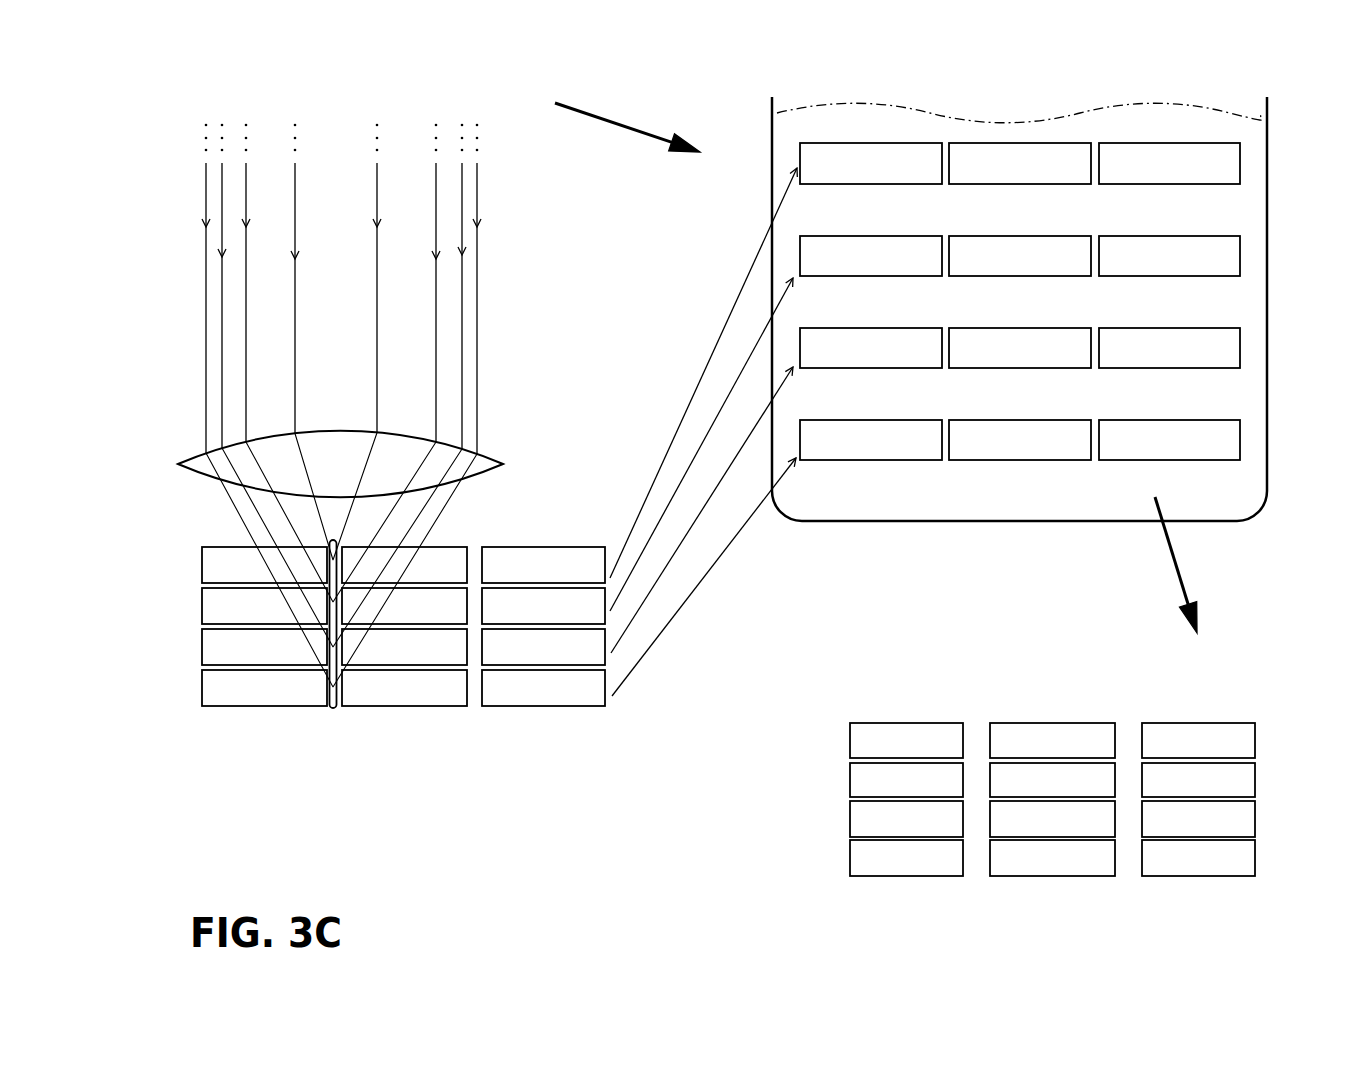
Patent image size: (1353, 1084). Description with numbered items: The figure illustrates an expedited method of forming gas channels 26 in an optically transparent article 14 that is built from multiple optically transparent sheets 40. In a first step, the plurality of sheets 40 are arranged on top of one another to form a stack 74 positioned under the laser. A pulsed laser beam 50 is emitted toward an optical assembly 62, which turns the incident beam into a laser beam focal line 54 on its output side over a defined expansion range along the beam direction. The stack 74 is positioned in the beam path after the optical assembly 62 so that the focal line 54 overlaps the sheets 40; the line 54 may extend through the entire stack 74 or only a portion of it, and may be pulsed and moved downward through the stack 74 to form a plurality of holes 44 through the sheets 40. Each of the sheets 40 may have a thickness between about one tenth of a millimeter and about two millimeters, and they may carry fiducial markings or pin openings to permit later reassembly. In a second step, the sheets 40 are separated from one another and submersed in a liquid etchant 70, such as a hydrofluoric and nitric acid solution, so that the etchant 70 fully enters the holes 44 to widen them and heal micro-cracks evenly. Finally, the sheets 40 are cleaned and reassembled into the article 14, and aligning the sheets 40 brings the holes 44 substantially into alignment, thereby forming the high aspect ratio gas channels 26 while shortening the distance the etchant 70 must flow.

The optically transparent article 14 is at (1212, 712).
The gas channels 26 is at (476, 545).
The optically transparent sheets 40 is at (1241, 172).
The holes 44 is at (466, 676).
The pulsed laser beam 50 is at (205, 280).
The laser beam focal line 54 is at (333, 709).
The optical assembly 62 is at (486, 456).
The etchant 70 is at (1193, 120).
The stack 74 is at (190, 657).